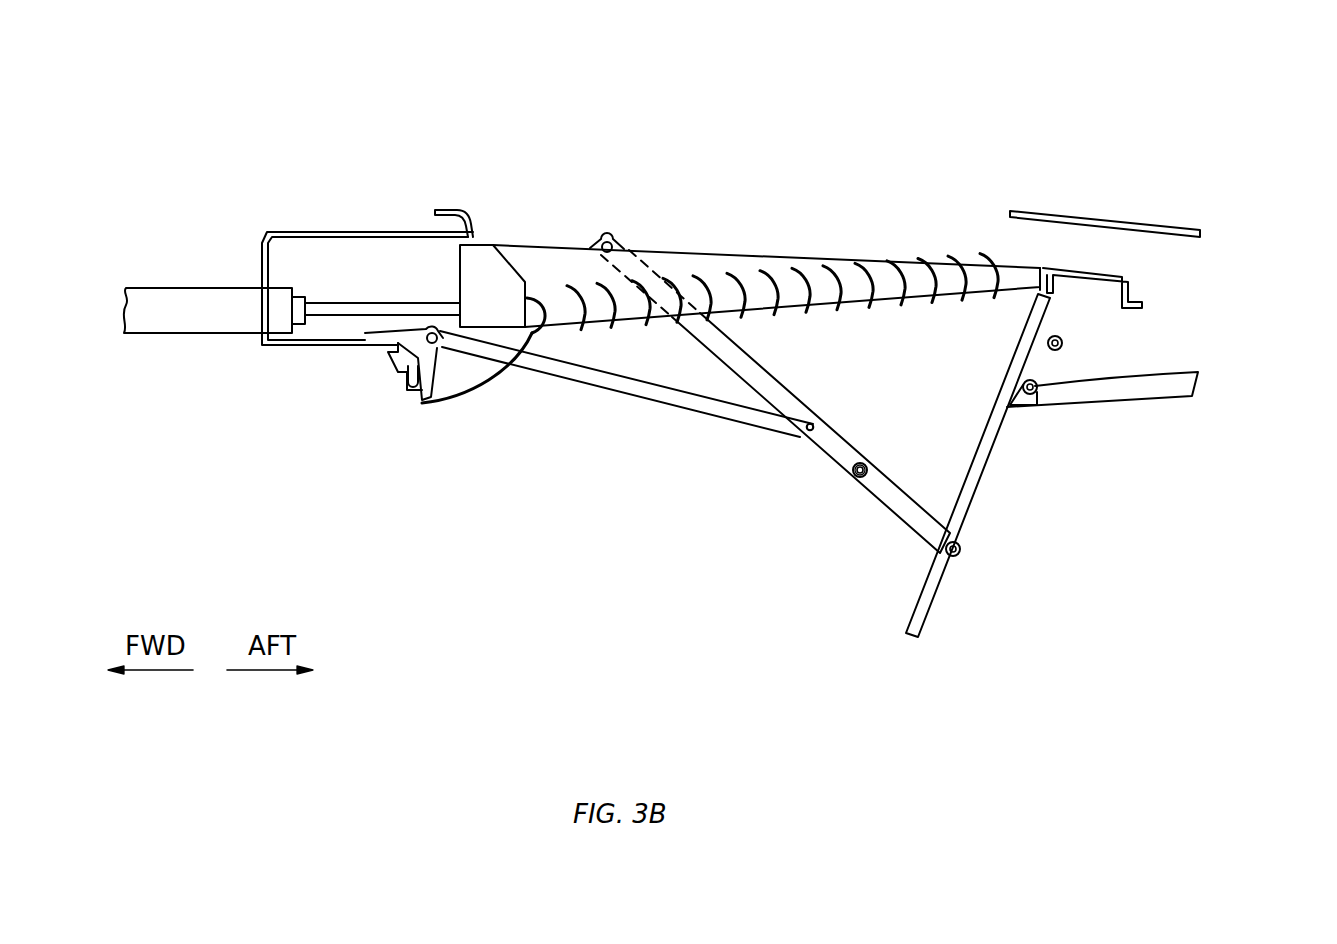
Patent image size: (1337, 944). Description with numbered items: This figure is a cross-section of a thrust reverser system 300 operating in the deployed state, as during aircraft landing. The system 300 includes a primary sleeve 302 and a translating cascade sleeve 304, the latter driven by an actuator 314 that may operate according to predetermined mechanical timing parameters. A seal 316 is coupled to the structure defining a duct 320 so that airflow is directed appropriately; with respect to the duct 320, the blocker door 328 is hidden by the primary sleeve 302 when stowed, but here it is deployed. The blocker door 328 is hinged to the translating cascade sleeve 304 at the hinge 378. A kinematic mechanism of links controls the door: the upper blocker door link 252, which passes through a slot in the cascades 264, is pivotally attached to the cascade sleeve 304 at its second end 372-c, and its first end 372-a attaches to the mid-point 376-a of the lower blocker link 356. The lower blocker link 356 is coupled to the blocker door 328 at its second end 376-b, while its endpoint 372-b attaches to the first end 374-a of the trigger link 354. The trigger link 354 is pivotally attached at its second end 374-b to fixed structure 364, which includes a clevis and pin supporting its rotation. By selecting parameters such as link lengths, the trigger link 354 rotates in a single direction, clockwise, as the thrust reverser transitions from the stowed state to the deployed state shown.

The thrust reverser system 300 is at (1246, 142).
The primary sleeve 302 is at (1190, 238).
The translating cascade sleeve 304 is at (845, 257).
The actuator 314 is at (170, 337).
The seal 316 is at (1033, 407).
The duct 320 is at (575, 665).
The blocker door 328 is at (973, 507).
The link 252 is at (760, 345).
The cascades 264 is at (707, 310).
The link 354 is at (624, 385).
The link 356 is at (907, 520).
The fixed structure 364 is at (395, 370).
The first end 372-a is at (862, 462).
The endpoint 372-b is at (812, 424).
The second end 372-c is at (608, 237).
The first end 374-a is at (800, 437).
The second end 374-b is at (452, 400).
The mid-point 376-a is at (867, 492).
The second end 376-b is at (958, 560).
The hinge 378 is at (1067, 342).